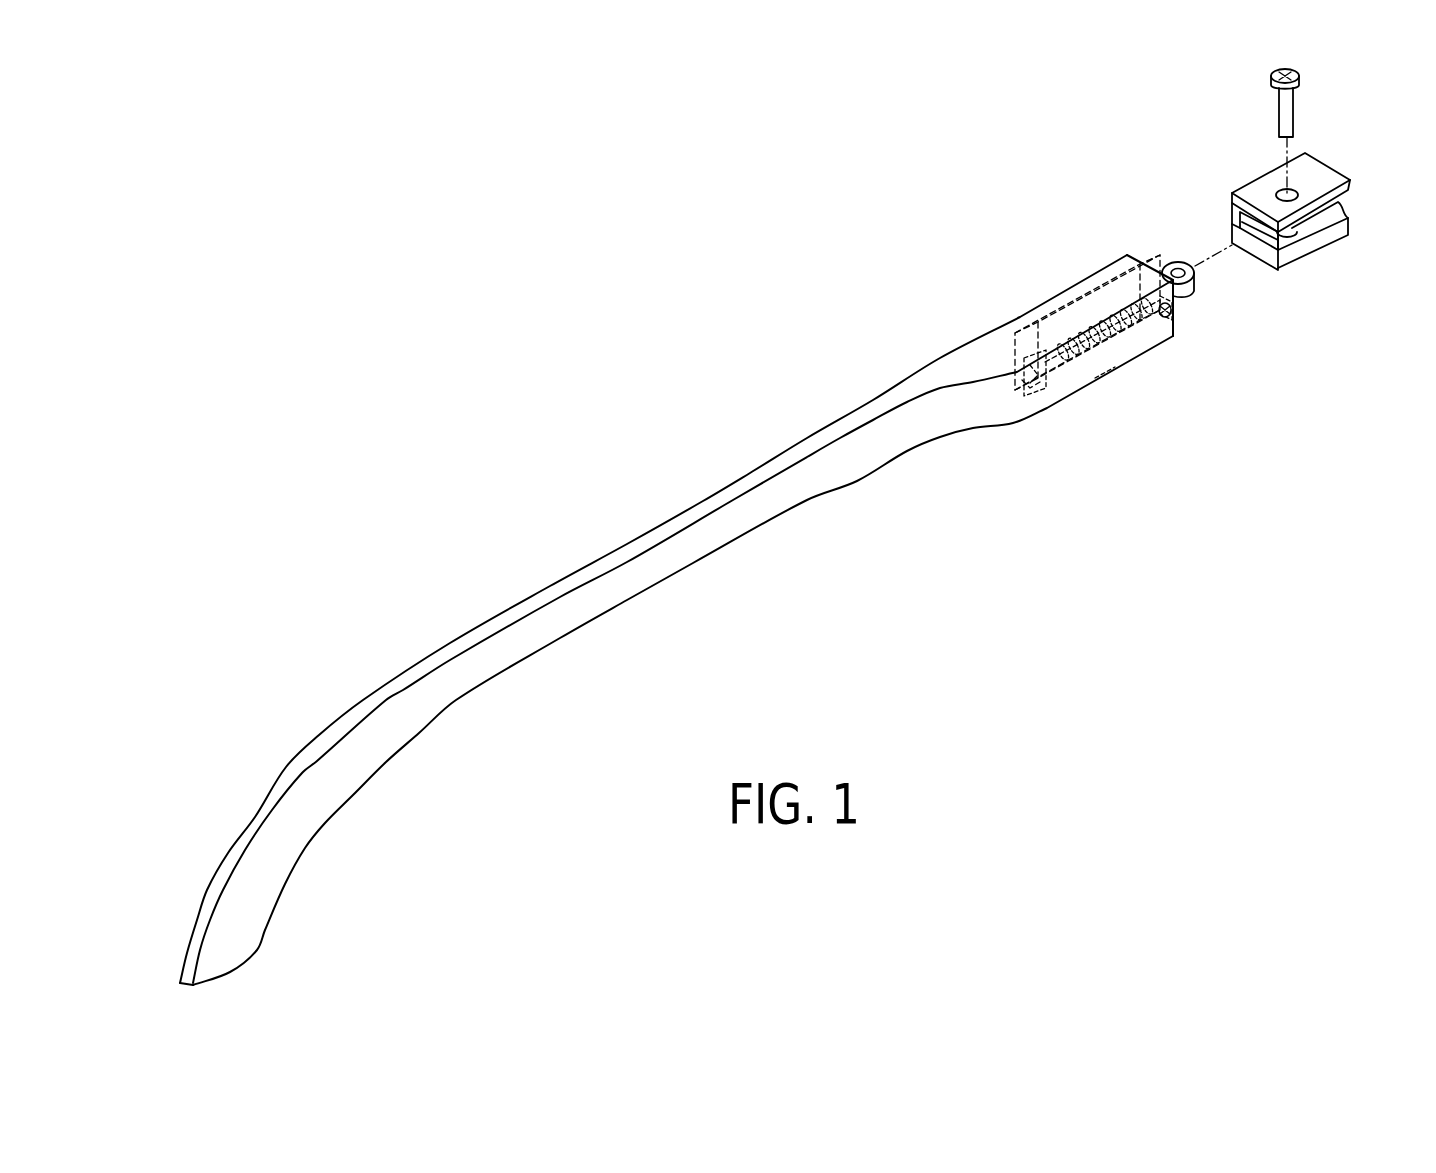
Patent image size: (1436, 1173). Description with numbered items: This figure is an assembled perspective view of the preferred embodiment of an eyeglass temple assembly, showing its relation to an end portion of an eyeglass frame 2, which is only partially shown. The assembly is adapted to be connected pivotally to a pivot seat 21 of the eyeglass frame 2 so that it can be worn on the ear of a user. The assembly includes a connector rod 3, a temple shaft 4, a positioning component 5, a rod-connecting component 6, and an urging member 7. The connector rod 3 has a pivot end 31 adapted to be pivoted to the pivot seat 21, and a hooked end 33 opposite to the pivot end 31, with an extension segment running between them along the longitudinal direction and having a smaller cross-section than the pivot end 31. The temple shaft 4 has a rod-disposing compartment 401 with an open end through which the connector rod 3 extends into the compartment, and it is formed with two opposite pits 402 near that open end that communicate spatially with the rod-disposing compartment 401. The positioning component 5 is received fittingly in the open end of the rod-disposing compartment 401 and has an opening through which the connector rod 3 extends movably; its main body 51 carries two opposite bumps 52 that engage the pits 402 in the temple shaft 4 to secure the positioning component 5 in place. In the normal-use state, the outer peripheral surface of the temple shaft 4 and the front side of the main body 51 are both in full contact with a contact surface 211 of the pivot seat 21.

The eyeglass frame 2 is at (1300, 213).
The pivot seat 21 is at (1270, 183).
The contact surface 211 is at (1263, 257).
The connector rod 3 is at (1120, 346).
The pivot end 31 is at (1163, 258).
The hooked end 33 is at (1025, 383).
The temple shaft 4 is at (805, 441).
The rod-disposing compartment 401 is at (1012, 312).
The pits 402 is at (1176, 312).
The positioning component 5 is at (1089, 308).
The main body 51 is at (1078, 280).
The bumps 52 is at (1170, 314).
The rod-connecting component 6 is at (1055, 398).
The urging member 7 is at (1105, 372).